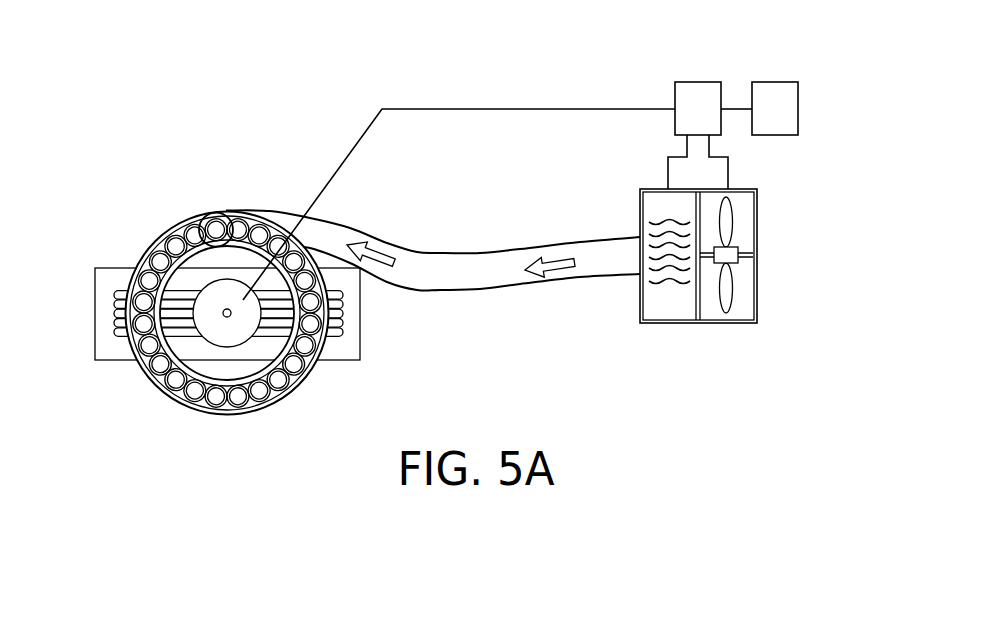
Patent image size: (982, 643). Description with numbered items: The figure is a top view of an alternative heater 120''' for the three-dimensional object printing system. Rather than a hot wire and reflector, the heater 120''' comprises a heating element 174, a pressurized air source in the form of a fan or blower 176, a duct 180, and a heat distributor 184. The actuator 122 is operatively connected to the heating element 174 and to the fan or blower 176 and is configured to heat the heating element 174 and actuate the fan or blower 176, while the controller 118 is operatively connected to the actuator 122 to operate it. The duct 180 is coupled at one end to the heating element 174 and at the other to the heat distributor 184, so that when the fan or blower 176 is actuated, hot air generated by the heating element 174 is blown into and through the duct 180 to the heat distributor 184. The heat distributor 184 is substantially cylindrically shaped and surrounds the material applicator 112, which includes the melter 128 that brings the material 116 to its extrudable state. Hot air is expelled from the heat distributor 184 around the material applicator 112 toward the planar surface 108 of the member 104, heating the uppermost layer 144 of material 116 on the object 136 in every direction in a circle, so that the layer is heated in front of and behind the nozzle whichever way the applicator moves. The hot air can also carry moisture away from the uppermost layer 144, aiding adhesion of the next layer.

The member 104 is at (353, 327).
The planar surface 108 is at (349, 284).
The material applicator 112 is at (196, 341).
The material 116 is at (339, 334).
The controller 118 is at (777, 82).
The heater 120''' is at (512, 202).
The actuator 122 is at (698, 82).
The melter 128 is at (230, 310).
The object 136 is at (117, 344).
The uppermost layer 144 is at (333, 334).
The heating element 174 is at (670, 318).
The fan or blower 176 is at (728, 318).
The duct 180 is at (484, 262).
The heat distributor 184 is at (168, 232).